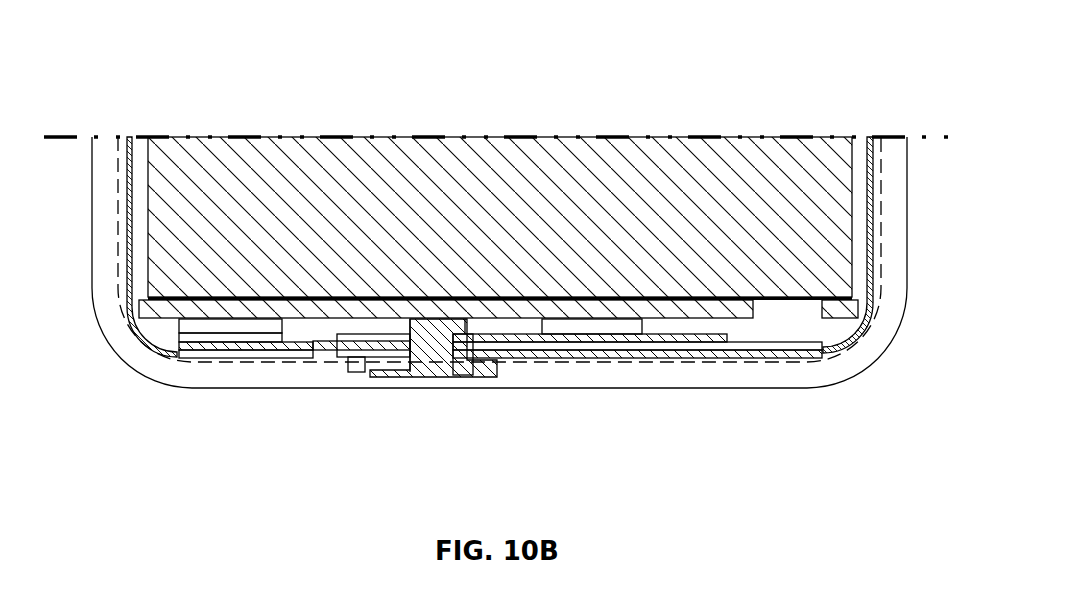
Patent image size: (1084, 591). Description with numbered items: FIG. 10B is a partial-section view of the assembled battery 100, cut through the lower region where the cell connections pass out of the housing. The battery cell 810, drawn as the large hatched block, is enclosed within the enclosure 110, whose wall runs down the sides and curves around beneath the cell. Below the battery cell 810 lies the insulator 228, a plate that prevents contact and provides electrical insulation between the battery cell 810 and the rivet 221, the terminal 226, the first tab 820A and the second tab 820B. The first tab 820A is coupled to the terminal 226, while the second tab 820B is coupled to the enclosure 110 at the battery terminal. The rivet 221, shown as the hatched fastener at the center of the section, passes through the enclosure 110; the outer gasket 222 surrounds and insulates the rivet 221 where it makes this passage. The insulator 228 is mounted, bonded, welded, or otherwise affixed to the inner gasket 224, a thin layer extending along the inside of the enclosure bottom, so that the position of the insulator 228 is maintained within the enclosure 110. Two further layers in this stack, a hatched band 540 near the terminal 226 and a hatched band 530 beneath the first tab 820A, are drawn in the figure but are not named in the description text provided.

The battery 100 is at (123, 68).
The enclosure 110 is at (868, 238).
The battery cell 810 is at (385, 155).
The insulator 228 is at (162, 304).
The second tab 820B is at (230, 324).
The flexible member 540 is at (403, 330).
The terminal 226 is at (370, 333).
The rivet 221 is at (432, 372).
The outer gasket 222 is at (500, 358).
The layer 530 is at (576, 328).
The inner gasket 224 is at (705, 340).
The first tab 820A is at (592, 322).